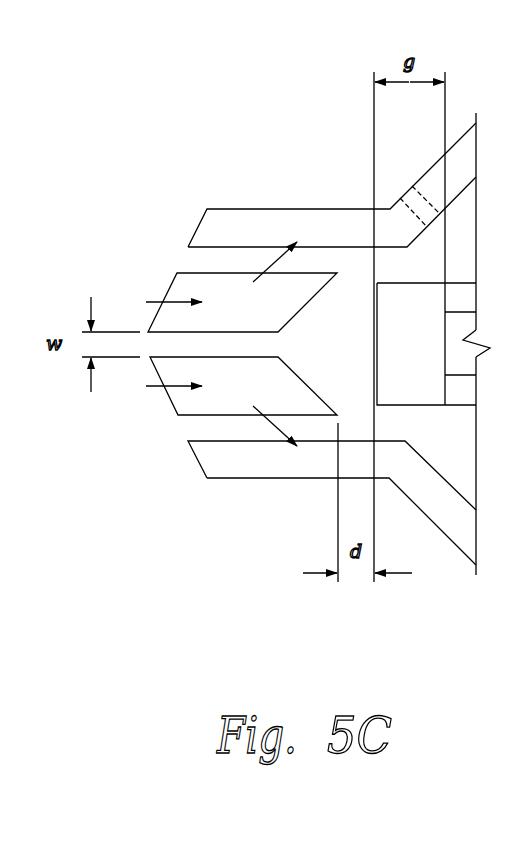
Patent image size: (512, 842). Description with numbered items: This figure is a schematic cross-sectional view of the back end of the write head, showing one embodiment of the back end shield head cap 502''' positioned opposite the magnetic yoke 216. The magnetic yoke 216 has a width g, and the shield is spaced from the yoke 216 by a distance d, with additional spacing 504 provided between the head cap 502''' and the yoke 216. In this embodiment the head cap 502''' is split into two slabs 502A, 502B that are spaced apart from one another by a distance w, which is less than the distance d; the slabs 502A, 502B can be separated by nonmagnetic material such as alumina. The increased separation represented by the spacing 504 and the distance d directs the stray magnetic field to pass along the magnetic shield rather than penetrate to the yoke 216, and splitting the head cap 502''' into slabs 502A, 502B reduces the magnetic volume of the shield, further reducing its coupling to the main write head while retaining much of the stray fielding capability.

The head cap 502''' is at (261, 344).
The slab 502A is at (192, 278).
The slab 502B is at (192, 413).
The spacing 504 is at (345, 356).
The magnetic yoke 216 is at (429, 356).